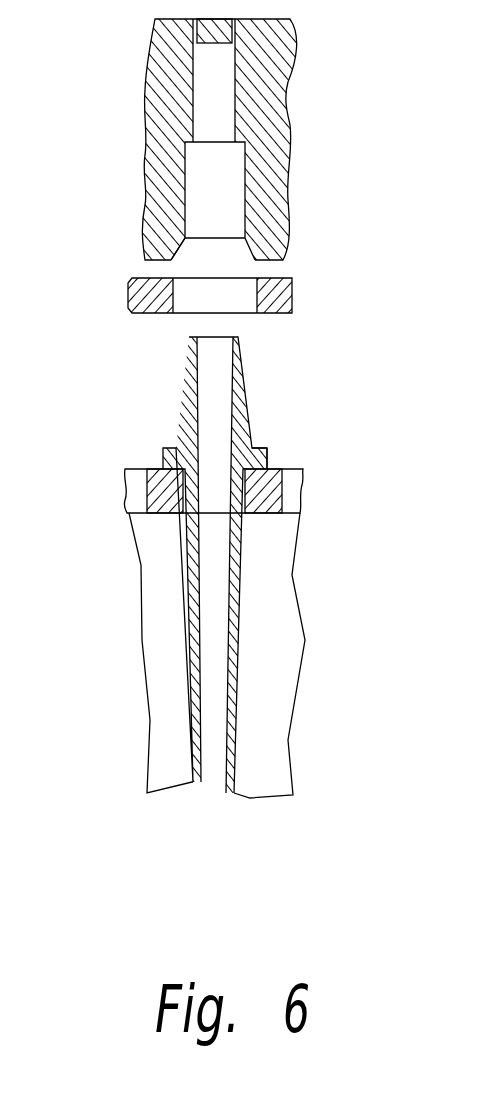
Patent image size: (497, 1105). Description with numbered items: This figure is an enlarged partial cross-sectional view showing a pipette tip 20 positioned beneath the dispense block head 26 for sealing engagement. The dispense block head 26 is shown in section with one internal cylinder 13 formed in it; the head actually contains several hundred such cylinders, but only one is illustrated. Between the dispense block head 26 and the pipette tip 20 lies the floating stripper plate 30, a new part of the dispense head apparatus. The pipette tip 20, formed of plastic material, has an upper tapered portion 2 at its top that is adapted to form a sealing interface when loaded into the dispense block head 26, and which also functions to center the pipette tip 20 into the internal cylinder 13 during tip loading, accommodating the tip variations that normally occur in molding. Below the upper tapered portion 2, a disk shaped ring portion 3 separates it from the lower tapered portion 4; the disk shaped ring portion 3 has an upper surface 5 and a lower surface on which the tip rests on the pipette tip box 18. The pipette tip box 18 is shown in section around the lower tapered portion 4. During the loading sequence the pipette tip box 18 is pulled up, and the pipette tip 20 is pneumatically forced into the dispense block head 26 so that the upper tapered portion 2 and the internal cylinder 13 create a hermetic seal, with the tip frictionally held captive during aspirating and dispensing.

The upper tapered portion 2 is at (178, 402).
The disk shaped ring portion 3 is at (268, 458).
The lower tapered portion 4 is at (193, 712).
The upper surface 5 is at (255, 441).
The internal cylinder 13 is at (194, 247).
The pipette tip box 18 is at (127, 490).
The pipette tip 20 is at (285, 346).
The dispense block head 26 is at (148, 140).
The floating stripper plate 30 is at (128, 298).